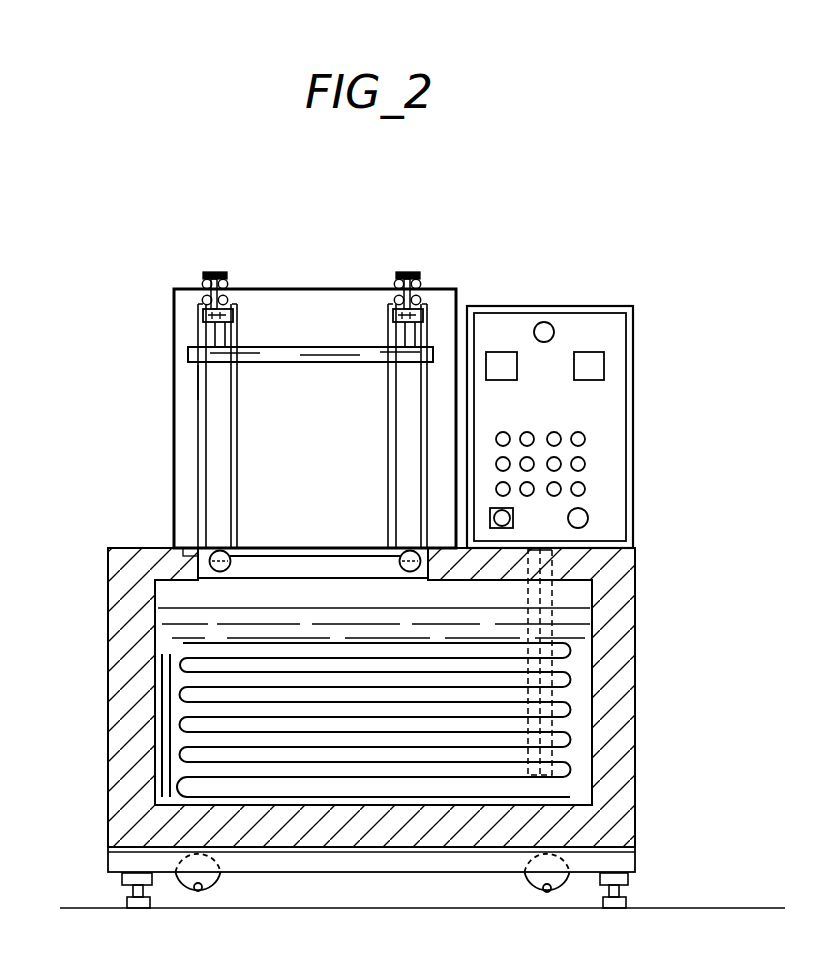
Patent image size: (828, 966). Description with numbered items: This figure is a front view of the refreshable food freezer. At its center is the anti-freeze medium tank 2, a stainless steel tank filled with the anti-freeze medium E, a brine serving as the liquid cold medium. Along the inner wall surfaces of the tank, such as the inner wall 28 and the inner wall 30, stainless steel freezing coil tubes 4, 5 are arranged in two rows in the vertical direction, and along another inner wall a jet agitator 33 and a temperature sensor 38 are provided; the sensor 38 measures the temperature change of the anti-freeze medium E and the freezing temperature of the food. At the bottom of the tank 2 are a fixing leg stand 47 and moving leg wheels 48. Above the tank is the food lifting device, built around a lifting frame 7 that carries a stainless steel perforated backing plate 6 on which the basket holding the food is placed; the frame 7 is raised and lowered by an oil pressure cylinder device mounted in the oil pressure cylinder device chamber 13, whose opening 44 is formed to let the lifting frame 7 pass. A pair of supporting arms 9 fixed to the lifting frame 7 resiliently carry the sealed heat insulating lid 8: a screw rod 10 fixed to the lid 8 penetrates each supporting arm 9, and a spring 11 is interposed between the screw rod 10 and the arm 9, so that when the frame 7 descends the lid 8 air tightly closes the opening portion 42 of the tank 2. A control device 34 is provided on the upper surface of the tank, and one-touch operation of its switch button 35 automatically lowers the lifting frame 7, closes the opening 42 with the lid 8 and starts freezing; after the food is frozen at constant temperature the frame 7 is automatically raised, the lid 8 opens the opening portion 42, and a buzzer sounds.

The anti-freeze medium tank 2 is at (108, 628).
The freezing coil tube 4 is at (163, 742).
The freezing coil tube 5 is at (390, 785).
The stainless steel backing perforated plate 6 is at (342, 558).
The lifting frame 7 is at (218, 425).
The sealed heat insulating lid 8 is at (305, 362).
The supporting arm 9 is at (202, 315).
The screw rod 10 is at (213, 270).
The spring 11 is at (232, 287).
The oil pressure cylinder chamber 13 is at (318, 288).
The inner wall of anti-freeze medium tank 28 is at (157, 684).
The inner wall of anti-freeze medium tank 30 is at (600, 687).
The jet-agitator 33 is at (575, 630).
The control device 34 is at (637, 315).
The switching button 35 is at (598, 467).
The temperature sensor 38 is at (543, 567).
The opening portion of the anti-freeze medium tank 42 is at (207, 560).
The opening of oil pressure cylinder device chamber 44 is at (200, 383).
The die stand 47 is at (150, 890).
The die wheel 48 is at (210, 895).
The anti-freeze medium E is at (172, 605).